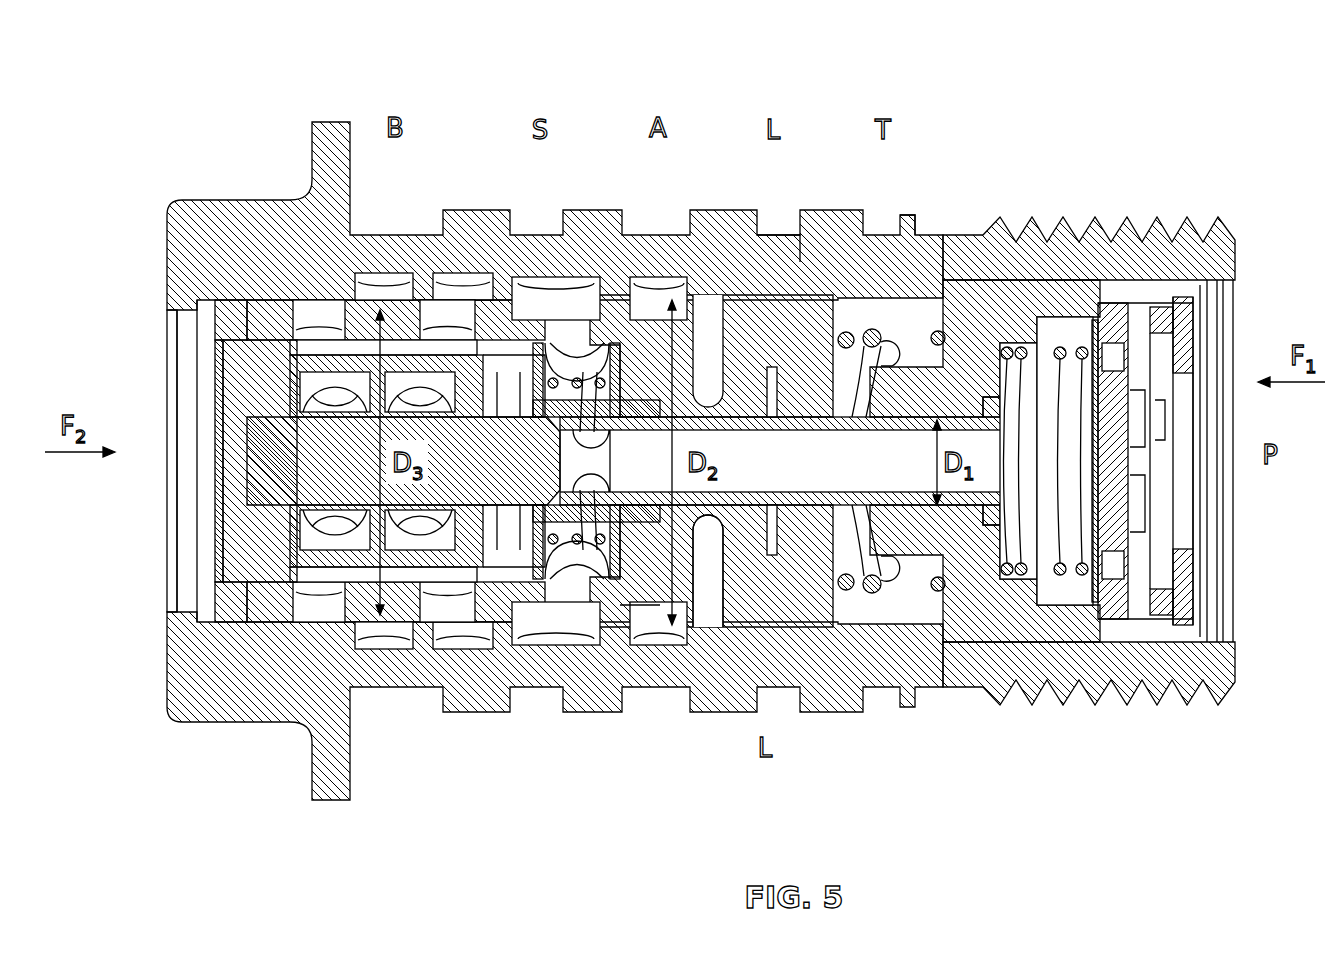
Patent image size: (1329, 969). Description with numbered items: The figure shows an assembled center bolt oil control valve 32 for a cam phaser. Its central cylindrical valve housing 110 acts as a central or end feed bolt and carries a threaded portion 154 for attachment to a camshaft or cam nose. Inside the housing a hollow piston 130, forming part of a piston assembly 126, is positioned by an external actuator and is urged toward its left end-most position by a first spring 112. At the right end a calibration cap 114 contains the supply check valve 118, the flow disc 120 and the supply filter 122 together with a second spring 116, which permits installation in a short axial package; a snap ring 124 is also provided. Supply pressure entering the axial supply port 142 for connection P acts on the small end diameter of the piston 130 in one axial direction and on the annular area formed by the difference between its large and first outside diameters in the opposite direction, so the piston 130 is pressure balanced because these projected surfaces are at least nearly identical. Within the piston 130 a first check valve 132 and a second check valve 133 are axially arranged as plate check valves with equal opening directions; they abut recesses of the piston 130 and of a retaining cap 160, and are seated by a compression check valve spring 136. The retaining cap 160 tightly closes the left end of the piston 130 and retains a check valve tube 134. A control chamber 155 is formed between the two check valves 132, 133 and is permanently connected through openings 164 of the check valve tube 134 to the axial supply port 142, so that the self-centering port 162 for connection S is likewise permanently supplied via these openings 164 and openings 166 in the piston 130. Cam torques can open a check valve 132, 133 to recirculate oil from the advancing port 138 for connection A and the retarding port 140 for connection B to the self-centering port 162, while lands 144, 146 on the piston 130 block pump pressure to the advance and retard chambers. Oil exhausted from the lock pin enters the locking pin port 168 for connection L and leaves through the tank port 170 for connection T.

The oil control valve 32 is at (697, 433).
The valve housing 110 is at (228, 232).
The first spring 112 is at (950, 300).
The calibration cap 114 is at (1148, 640).
The second spring 116 is at (1030, 590).
The supply check valve 118 is at (1062, 600).
The flow disc 120 is at (1113, 320).
The supply filter 122 is at (1160, 560).
The snap ring 124 is at (1182, 352).
The piston assembly 126 is at (214, 358).
The piston 130 is at (260, 592).
The first check valve 132 is at (635, 612).
The second check valve 133 is at (553, 548).
The check valve tube 134 is at (752, 515).
The check valve spring 136 is at (575, 568).
The advancing port 138 is at (683, 297).
The retarding port 140 is at (393, 283).
The axial supply port 142 is at (1020, 585).
The land 144 is at (653, 607).
The land 146 is at (398, 607).
The threaded portion 154 is at (1225, 692).
The control chamber 155 is at (587, 345).
The retaining cap 160 is at (240, 548).
The self-centering port 162 is at (556, 300).
The openings 164 is at (620, 565).
The openings 166 is at (620, 335).
The locking pin port 168 is at (783, 262).
The tank port 170 is at (897, 290).